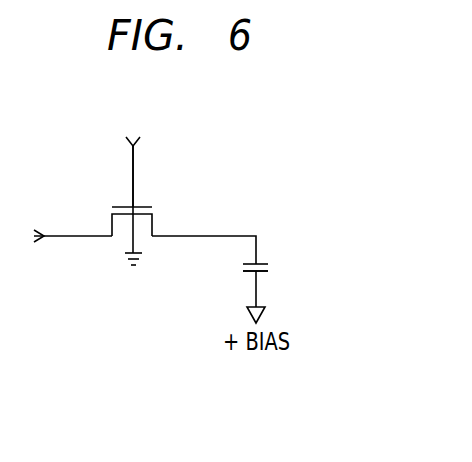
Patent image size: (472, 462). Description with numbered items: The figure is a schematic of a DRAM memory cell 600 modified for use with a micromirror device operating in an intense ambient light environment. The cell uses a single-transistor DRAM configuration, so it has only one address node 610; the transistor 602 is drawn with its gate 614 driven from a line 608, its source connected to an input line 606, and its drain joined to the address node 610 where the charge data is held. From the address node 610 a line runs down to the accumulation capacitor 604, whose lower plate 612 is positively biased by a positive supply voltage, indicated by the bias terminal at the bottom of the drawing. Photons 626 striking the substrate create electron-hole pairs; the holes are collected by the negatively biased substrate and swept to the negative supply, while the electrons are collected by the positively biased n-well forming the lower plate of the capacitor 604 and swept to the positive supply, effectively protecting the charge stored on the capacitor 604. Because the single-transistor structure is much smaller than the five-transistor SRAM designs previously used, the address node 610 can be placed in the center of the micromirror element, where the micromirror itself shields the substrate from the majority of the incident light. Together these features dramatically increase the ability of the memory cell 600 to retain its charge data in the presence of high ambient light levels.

The memory cell 600 is at (243, 118).
The transistor 602 is at (106, 256).
The capacitor 604 is at (272, 244).
The input line 606 is at (70, 235).
The gate control line 608 is at (133, 136).
The address node 610 is at (206, 235).
The capacitor second plate 612 is at (269, 270).
The gate 614 is at (143, 205).
The photons 626 is at (254, 291).